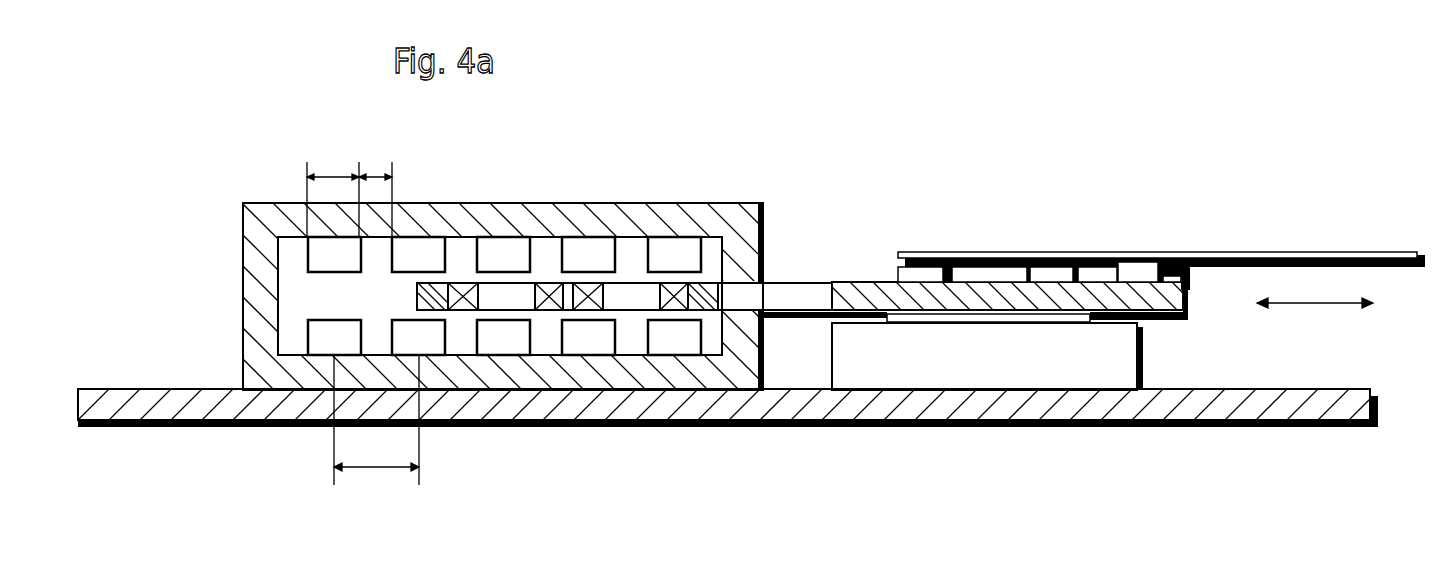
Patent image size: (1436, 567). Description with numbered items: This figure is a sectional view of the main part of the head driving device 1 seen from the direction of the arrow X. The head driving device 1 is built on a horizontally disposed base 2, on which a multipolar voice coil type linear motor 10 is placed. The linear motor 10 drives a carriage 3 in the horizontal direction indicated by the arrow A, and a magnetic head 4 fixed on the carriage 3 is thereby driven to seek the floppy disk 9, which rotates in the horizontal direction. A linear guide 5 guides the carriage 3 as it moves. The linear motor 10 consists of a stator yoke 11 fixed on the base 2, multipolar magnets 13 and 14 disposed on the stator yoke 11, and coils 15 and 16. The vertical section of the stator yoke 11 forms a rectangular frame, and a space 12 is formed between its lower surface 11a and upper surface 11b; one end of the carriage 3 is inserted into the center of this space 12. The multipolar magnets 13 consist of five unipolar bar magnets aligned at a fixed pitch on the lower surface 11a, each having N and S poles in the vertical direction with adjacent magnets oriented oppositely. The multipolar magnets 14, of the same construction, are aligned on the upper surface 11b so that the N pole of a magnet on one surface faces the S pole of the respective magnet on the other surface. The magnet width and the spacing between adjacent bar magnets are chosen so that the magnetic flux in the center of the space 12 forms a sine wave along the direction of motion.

The head driving device 1 is at (688, 86).
The base 2 is at (807, 405).
The carriage 3 is at (872, 282).
The magnetic head 4 is at (1134, 261).
The linear guide 5 is at (972, 377).
The floppy disk 9 is at (1213, 252).
The linear motor 10 is at (633, 190).
The stator yoke 11 is at (695, 380).
The lower surface 11a is at (278, 373).
The upper surface 11b is at (695, 203).
The space 12 is at (290, 273).
The multipolar magnets 13 is at (658, 352).
The multipolar magnets 14 is at (663, 243).
The coil 15 is at (548, 298).
The coil 16 is at (565, 291).